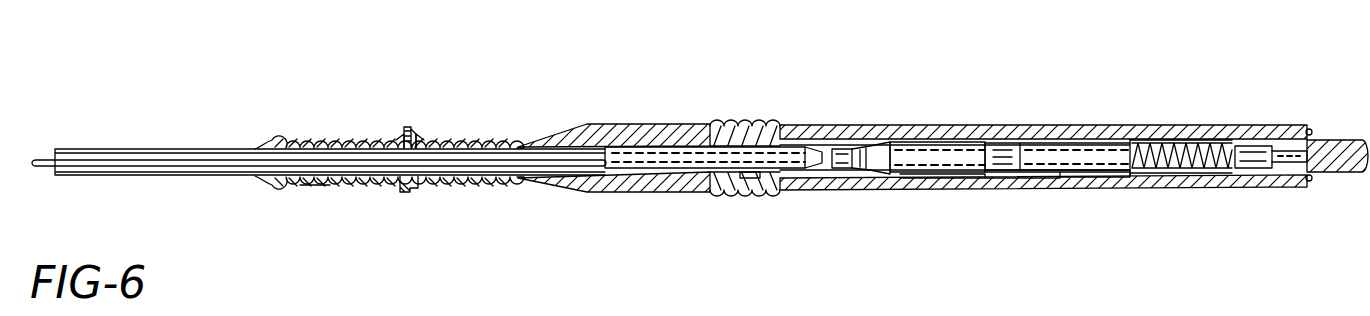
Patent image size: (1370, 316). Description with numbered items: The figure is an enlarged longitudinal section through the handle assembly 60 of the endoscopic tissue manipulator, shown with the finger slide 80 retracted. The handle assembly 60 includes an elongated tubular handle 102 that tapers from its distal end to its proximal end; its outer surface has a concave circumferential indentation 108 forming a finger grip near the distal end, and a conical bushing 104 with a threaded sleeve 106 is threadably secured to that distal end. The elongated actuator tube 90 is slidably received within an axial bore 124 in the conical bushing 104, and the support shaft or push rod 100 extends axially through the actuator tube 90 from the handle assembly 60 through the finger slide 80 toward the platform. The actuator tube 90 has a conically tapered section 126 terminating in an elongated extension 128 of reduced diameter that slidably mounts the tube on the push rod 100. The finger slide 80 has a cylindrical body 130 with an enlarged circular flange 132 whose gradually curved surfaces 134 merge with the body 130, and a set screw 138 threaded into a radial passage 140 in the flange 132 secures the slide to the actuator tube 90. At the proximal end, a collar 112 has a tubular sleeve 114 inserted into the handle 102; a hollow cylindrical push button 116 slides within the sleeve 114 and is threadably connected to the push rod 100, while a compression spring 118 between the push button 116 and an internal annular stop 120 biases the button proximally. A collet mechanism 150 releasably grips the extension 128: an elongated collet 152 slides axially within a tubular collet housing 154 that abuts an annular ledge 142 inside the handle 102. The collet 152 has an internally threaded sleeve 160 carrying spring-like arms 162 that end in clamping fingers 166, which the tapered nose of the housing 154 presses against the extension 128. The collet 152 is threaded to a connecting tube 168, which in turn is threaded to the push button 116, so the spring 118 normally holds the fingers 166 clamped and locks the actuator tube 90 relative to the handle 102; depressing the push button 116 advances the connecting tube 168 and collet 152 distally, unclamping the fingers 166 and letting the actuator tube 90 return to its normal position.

The handle assembly 60 is at (645, 96).
The finger slide 80 is at (303, 108).
The actuator tube 90 is at (197, 150).
The push rod 100 is at (137, 160).
The handle 102 is at (940, 125).
The conical bushing 104 is at (570, 126).
The threaded sleeve 106 is at (730, 127).
The concave circumferential indentation 108 is at (748, 190).
The collar 112 is at (1308, 130).
The tubular sleeve 114 is at (1252, 186).
The push button 116 is at (1345, 172).
The compression spring 118 is at (1175, 188).
The internal annular stop 120 is at (1128, 130).
The axial bore 124 is at (565, 190).
The conically tapered section 126 is at (818, 125).
The extension 128 is at (812, 190).
The cylindrical body 130 is at (312, 183).
The circular flange 132 is at (405, 193).
The curved surfaces 134 is at (392, 130).
The set screw 138 is at (422, 132).
The radial passage 140 is at (407, 125).
The annular ledge 142 is at (1060, 128).
The collet mechanism 150 is at (864, 138).
The collet 152 is at (977, 190).
The collet housing 154 is at (1048, 188).
The internally threaded sleeve 160 is at (1010, 127).
The spring-like arms 162 is at (932, 190).
The clamping fingers 166 is at (848, 190).
The connecting tube 168 is at (1095, 188).